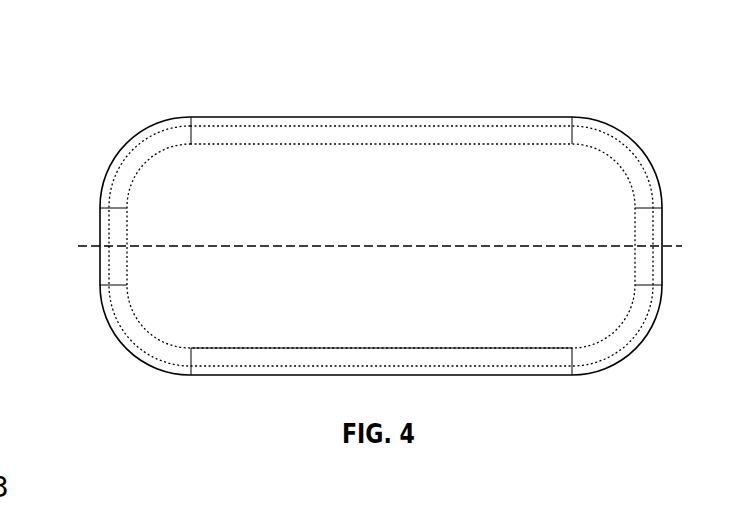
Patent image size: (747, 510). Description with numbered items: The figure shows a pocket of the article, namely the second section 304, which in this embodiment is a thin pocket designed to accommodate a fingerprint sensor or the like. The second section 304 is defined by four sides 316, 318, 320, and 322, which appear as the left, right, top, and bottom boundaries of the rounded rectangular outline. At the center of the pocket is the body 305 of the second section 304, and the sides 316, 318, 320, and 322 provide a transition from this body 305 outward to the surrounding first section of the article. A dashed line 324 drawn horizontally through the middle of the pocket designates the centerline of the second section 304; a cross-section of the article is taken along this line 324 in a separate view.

The second section 304 is at (268, 83).
The body 305 is at (375, 206).
The side 316 is at (100, 262).
The side 318 is at (663, 272).
The side 320 is at (487, 117).
The side 322 is at (270, 377).
The line 324 is at (643, 245).